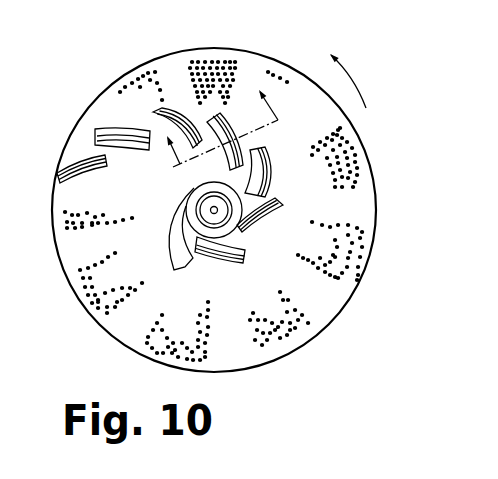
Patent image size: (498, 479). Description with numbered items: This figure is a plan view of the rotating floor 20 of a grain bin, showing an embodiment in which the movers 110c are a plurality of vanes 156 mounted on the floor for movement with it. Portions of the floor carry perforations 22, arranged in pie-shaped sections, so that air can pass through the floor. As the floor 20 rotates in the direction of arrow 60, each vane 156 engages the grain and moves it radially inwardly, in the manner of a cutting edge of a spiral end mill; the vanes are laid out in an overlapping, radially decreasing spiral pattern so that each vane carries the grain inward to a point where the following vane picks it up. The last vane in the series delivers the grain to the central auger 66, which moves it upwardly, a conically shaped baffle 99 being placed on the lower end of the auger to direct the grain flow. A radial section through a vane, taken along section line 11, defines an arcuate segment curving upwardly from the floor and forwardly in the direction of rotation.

The floor 20 is at (368, 203).
The perforations 22 is at (220, 62).
The direction of rotation arrow 60 is at (365, 89).
The auger 66 is at (203, 209).
The conically shaped baffle 99 is at (222, 230).
The movers 110c is at (185, 98).
The vane 156 is at (72, 169).
The section line 11- 11 is at (240, 144).